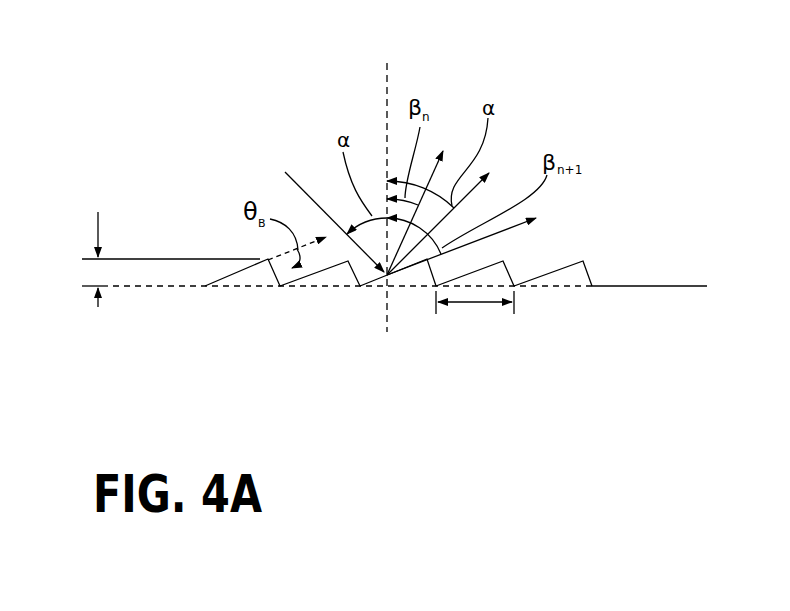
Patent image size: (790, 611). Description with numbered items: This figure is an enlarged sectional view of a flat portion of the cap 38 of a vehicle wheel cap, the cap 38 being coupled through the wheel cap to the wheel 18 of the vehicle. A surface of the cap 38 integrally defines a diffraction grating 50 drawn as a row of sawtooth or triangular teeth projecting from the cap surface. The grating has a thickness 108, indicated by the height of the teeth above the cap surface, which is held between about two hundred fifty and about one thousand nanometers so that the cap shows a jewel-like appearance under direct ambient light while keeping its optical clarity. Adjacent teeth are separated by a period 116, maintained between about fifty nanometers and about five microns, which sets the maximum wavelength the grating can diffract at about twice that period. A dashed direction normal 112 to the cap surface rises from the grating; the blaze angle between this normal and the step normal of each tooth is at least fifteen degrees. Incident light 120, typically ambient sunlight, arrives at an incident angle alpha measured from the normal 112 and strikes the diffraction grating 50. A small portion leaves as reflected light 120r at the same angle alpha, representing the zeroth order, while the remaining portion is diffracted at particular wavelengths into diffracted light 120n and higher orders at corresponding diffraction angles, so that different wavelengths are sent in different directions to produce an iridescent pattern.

The wheel 18 is at (632, 407).
The cap 38 is at (657, 283).
The diffraction grating 50 is at (592, 343).
The thickness 108 is at (97, 231).
The direction normal 112 is at (387, 92).
The period 116 is at (460, 304).
The incident light 120 is at (323, 207).
The diffracted light 120n is at (430, 199).
The reflected light 120r is at (460, 211).